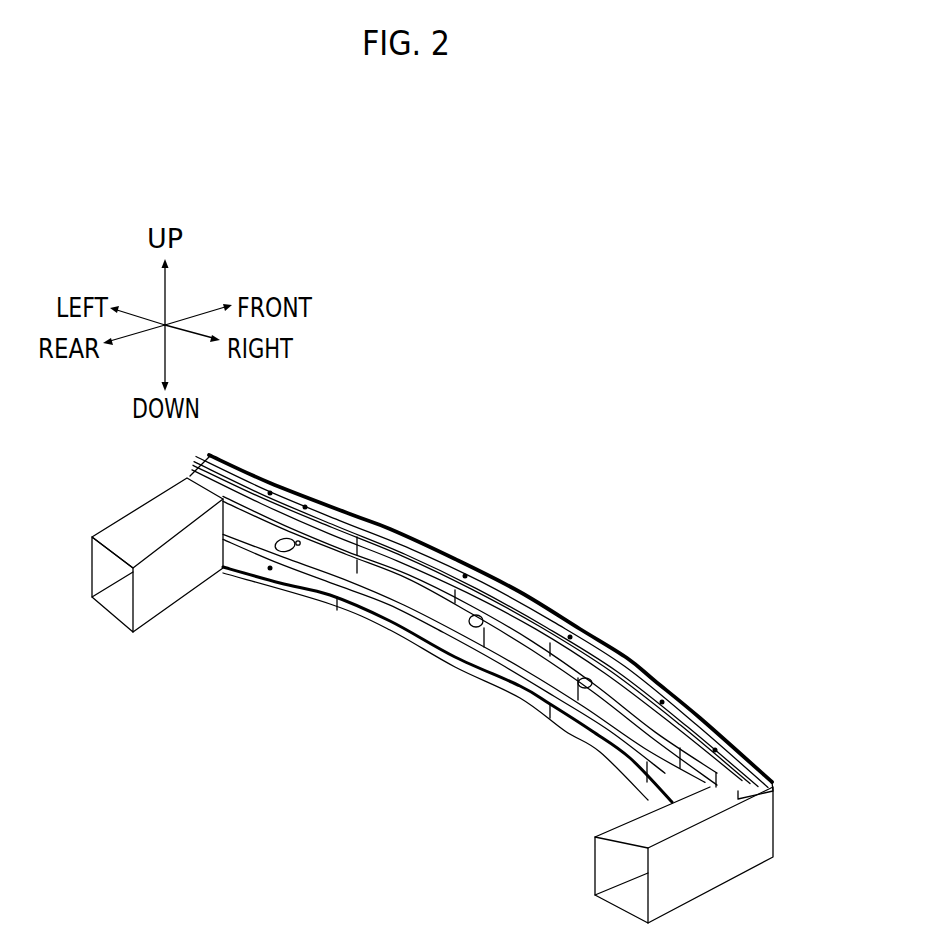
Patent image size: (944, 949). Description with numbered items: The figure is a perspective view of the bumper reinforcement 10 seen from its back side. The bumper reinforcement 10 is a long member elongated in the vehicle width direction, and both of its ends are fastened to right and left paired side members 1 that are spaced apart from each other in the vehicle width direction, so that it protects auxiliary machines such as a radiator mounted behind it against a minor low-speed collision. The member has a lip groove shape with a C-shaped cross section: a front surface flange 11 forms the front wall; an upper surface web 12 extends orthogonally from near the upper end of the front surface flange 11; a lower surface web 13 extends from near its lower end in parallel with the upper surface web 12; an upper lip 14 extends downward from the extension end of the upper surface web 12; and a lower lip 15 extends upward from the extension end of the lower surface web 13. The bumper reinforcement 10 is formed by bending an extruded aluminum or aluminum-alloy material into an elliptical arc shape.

The side member 1 is at (127, 513).
The bumper reinforcement 10 is at (481, 628).
The front surface flange 11 is at (560, 613).
The upper surface web 12 is at (442, 565).
The lower surface web 13 is at (497, 692).
The upper lip 14 is at (463, 595).
The lower lip 15 is at (455, 665).